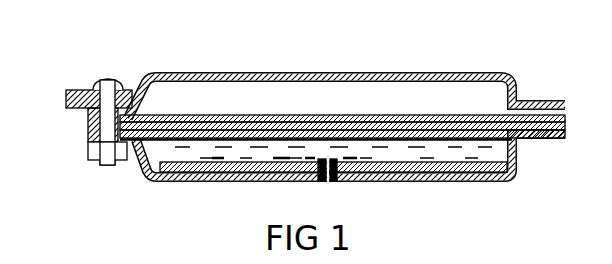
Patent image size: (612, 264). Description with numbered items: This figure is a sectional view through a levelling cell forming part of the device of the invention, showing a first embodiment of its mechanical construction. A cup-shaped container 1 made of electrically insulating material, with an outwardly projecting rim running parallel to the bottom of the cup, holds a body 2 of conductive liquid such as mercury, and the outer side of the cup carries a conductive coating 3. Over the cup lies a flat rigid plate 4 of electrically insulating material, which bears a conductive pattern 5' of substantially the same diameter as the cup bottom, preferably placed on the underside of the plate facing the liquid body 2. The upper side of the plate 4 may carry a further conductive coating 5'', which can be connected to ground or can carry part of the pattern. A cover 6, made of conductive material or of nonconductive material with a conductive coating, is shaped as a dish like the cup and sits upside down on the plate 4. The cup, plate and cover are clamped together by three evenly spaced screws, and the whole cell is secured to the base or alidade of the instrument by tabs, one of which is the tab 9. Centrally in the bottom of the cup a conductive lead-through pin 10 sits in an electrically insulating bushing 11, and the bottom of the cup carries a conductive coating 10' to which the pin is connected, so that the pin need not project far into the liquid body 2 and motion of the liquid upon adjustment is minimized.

The cup-shaped container 1 is at (472, 182).
The body of conductive liquid 2 is at (205, 150).
The conductive coating 3 is at (444, 173).
The flat rigid plate 4 is at (258, 119).
The conductive pattern 5' is at (342, 81).
The conductive coating 5'' is at (342, 86).
The cover 6 is at (497, 78).
The tab 9 is at (80, 92).
The conductive lead-through pin 10 is at (345, 182).
The conductive coating 10' is at (284, 181).
The electrically insulating bushing 11 is at (320, 178).